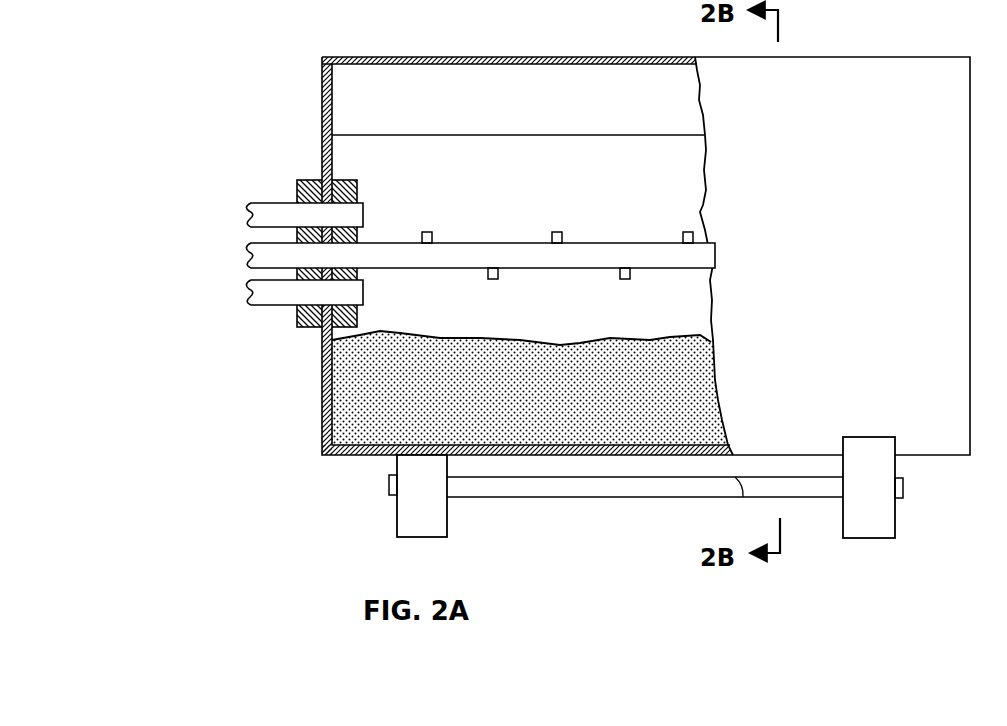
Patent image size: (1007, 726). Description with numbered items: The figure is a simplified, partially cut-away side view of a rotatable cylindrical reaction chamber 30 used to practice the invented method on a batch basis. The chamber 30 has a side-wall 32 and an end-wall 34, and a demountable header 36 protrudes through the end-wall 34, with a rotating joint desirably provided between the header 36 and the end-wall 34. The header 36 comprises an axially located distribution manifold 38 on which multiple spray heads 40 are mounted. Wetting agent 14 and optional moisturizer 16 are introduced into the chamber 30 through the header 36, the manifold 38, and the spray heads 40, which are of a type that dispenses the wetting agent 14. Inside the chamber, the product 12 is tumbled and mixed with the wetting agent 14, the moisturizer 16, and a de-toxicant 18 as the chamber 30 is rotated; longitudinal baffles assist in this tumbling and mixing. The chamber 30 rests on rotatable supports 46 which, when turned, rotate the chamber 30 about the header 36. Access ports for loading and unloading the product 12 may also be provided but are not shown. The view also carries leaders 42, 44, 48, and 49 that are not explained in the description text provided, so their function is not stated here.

The product 12 is at (608, 416).
The wetting agent 14 is at (192, 252).
The moisturizer 16 is at (236, 253).
The de-toxicant 18 is at (236, 212).
The rotatable cylindrical reaction chamber 30 is at (550, 524).
The side-wall 32 is at (854, 266).
The end-wall 34 is at (322, 98).
The demountable header 36 is at (357, 182).
The distribution manifold 38 is at (443, 269).
The spray heads 40 is at (625, 280).
The upper conduit 42 is at (273, 202).
The level line 44 is at (603, 118).
The rotatable supports 46 is at (447, 509).
The lower conduit 48 is at (283, 306).
The outlet stream 49 is at (227, 293).